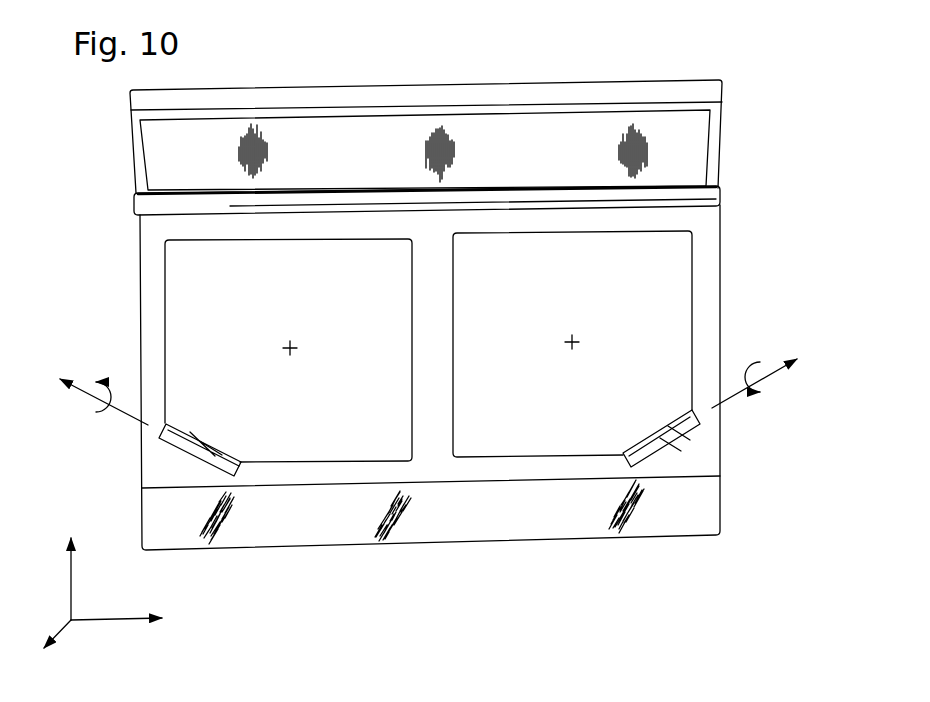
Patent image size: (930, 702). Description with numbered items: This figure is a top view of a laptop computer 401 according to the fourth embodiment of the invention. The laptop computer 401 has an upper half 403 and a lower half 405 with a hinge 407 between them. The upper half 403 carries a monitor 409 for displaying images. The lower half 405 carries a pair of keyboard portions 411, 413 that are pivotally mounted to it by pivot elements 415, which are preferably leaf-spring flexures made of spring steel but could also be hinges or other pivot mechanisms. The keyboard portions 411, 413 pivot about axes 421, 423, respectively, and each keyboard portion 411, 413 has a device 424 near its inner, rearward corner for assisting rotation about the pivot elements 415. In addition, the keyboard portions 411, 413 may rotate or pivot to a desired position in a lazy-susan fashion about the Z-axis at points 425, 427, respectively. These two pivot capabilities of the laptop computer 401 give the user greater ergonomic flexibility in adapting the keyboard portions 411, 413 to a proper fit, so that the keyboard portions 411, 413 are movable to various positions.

The laptop computer 401 is at (752, 230).
The upper half 403 is at (724, 132).
The lower half 405 is at (724, 283).
The hinge 407 is at (148, 203).
The monitor 409 is at (167, 155).
The keyboard portion 411 is at (288, 419).
The keyboard portion 413 is at (572, 411).
The pivot element 415 is at (193, 447).
The axis 421 is at (101, 385).
The axis 423 is at (754, 367).
The device 424 is at (388, 253).
The point 425 is at (317, 349).
The point 427 is at (597, 342).